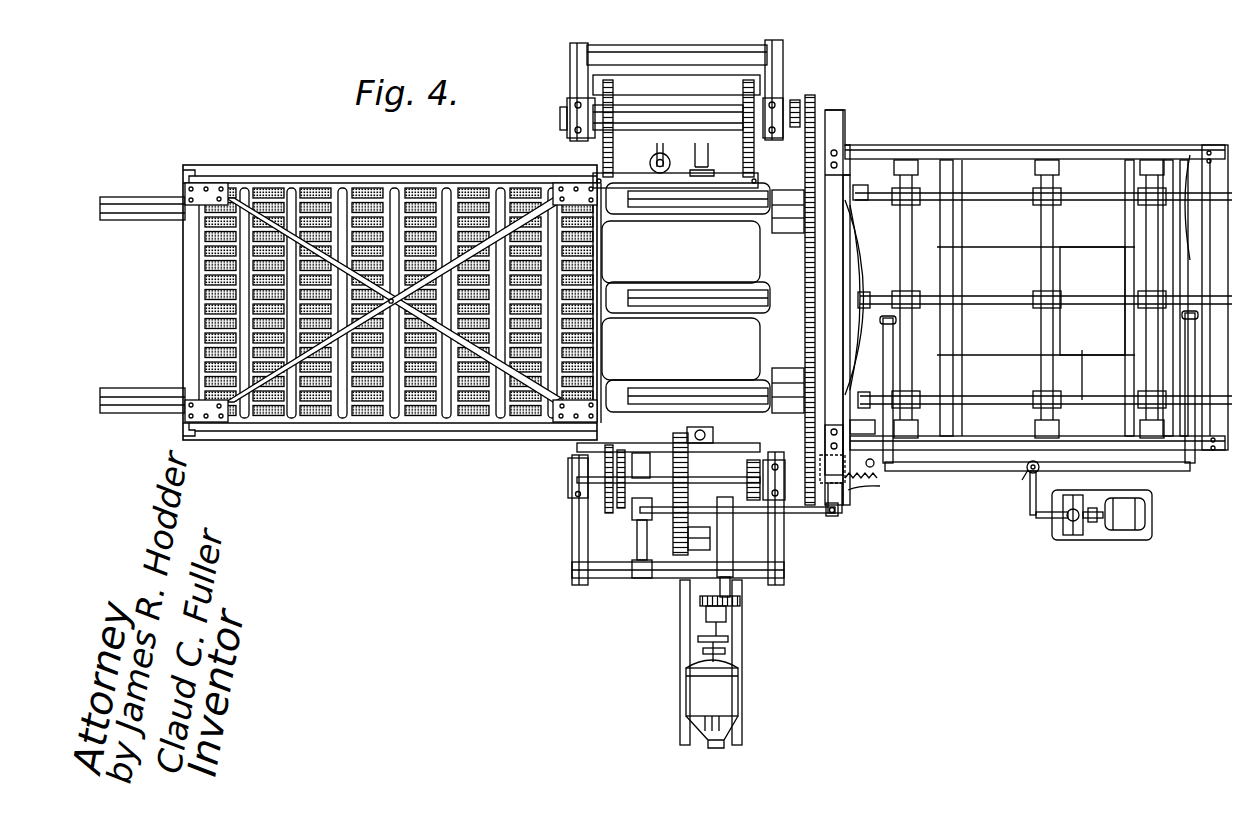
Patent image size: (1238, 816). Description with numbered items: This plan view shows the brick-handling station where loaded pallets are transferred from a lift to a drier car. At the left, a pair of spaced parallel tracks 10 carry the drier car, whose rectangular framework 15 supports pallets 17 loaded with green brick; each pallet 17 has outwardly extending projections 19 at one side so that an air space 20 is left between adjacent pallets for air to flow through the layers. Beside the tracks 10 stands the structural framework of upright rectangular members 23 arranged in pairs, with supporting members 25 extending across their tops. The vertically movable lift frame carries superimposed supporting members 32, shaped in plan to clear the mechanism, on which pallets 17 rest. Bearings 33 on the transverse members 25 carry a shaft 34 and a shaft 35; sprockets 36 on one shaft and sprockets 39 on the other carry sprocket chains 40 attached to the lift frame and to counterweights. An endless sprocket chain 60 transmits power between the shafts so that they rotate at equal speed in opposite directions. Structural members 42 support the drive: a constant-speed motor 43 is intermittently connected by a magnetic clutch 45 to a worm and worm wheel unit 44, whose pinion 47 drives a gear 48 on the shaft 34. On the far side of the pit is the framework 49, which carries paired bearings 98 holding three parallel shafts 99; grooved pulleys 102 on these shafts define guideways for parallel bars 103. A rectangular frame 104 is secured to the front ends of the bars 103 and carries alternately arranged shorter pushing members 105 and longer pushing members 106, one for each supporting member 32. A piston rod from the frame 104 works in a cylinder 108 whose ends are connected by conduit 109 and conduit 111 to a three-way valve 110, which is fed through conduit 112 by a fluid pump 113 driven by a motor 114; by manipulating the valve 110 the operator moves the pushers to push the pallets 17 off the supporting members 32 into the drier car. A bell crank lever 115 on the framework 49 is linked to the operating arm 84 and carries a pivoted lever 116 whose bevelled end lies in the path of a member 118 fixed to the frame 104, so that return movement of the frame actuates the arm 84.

The tracks 10 is at (145, 215).
The rectangular framework 15 is at (300, 440).
The pallets 17 is at (472, 423).
The outwardly extending projections 19 is at (388, 183).
The air space 20 is at (492, 183).
The rectangular members 23 is at (652, 48).
The supporting members 25 is at (570, 52).
The supporting members 32 is at (620, 320).
The bearings 33 is at (567, 108).
The shaft 34 is at (560, 120).
The shaft 35 is at (792, 465).
The sprockets 36 is at (610, 85).
The sprockets 39 is at (612, 488).
The sprocket chains 40 is at (592, 548).
The structural members 42 is at (740, 745).
The motor 43 is at (700, 700).
The worm and worm wheel unit 44 is at (735, 545).
The magnetic clutch 45 is at (730, 640).
The pinion 47 is at (690, 520).
The gear 48 is at (630, 572).
The framework 49 is at (1085, 152).
The endless sprocket chain 60 is at (830, 265).
The operating arm 84 is at (828, 516).
The bearings 98 is at (906, 160).
The shafts 99 is at (1035, 230).
The grooved pulleys 102 is at (908, 196).
The bars 103 is at (1183, 200).
The rectangular frame 104 is at (848, 270).
The pushing members 105 is at (845, 236).
The pushing members 106 is at (784, 195).
The cylinder 108 is at (1092, 301).
The conduit 109 is at (895, 378).
The three-way valve 110 is at (1040, 470).
The conduit 111 is at (1195, 470).
The conduit 112 is at (1030, 510).
The fluid pump 113 is at (1072, 536).
The motor 114 is at (1125, 531).
The bell crank lever 115 is at (850, 496).
The lever 116 is at (860, 482).
The member 118 is at (835, 378).